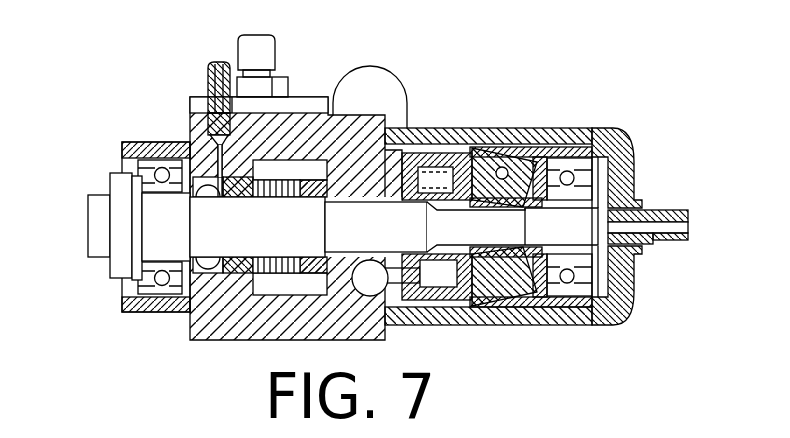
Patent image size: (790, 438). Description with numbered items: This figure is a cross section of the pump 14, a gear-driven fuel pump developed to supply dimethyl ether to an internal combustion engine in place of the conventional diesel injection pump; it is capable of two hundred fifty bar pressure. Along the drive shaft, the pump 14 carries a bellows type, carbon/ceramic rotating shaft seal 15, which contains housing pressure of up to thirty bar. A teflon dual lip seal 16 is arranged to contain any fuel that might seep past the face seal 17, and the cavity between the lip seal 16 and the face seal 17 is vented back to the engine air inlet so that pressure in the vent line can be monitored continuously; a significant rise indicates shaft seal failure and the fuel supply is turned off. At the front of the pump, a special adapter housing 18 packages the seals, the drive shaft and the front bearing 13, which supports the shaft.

The front bearing 13 is at (143, 158).
The pump 14 is at (505, 128).
The rotating shaft seal 15 is at (288, 192).
The lip seal 16 is at (192, 315).
The face seal 17 is at (228, 273).
The adapter housing 18 is at (167, 142).